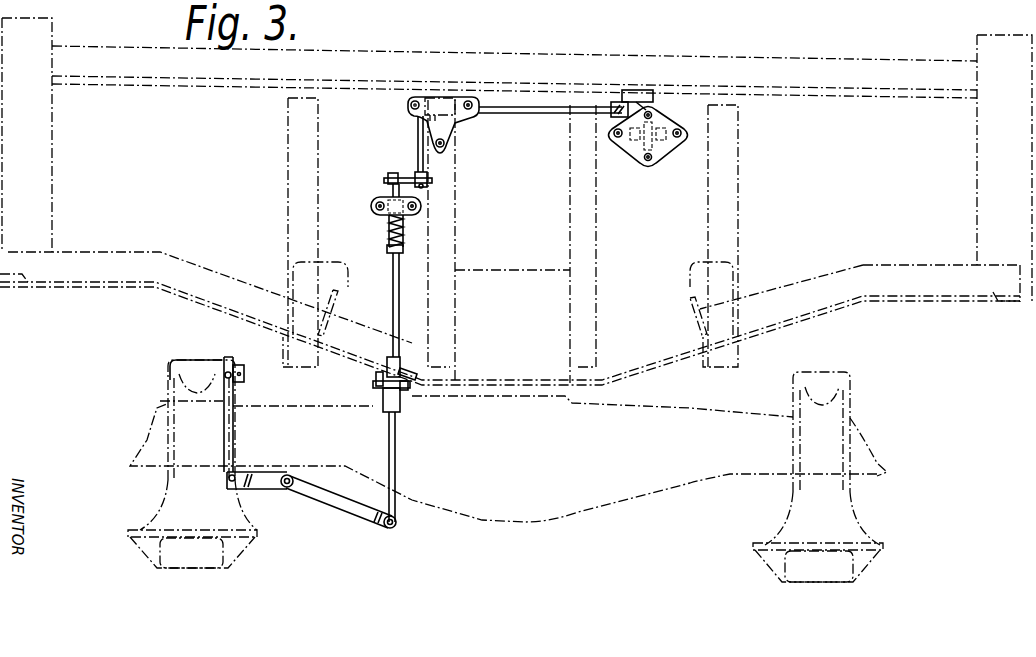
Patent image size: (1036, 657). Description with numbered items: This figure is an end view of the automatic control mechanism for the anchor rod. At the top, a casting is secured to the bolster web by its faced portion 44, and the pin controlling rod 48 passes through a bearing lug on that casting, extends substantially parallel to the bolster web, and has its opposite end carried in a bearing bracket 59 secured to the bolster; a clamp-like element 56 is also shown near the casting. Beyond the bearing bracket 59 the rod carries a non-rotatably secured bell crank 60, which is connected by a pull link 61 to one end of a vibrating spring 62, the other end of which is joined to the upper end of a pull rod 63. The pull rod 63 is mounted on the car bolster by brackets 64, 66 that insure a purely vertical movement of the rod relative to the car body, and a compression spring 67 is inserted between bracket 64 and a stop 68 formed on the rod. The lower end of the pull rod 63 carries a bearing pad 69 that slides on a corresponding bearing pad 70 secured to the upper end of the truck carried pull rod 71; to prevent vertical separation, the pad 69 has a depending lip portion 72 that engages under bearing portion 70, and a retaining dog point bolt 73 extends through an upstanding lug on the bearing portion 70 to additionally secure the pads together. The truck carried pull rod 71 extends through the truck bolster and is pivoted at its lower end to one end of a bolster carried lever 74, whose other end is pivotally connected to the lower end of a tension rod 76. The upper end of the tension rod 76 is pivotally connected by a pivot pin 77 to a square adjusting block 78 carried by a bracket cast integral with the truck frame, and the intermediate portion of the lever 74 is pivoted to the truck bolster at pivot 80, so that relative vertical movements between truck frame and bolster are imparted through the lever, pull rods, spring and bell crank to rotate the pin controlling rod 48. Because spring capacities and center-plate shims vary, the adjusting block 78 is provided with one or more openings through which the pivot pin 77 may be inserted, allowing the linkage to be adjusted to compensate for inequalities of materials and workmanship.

The faced portion 44 is at (669, 160).
The pin controlling rod 48 is at (556, 113).
The clamp 56 is at (636, 90).
The bearing bracket 59 is at (455, 122).
The bell crank 60 is at (423, 99).
The pull link 61 is at (417, 133).
The vibrating spring 62 is at (411, 173).
The pull rod 63 is at (399, 300).
The bracket 64 is at (382, 198).
The bracket 66 is at (389, 360).
The compression spring 67 is at (387, 233).
The stop 68 is at (387, 250).
The bearing pad 69 is at (411, 371).
The bearing pad 70 is at (381, 388).
The truck carried pull rod 71 is at (396, 458).
The depending lip portion 72 is at (410, 389).
The retaining dog point bolt 73 is at (376, 379).
The bolster carried lever 74 is at (338, 496).
The tension rod 76 is at (234, 431).
The pivot pin 77 is at (178, 373).
The adjusting block 78 is at (245, 375).
The pivot 80 is at (287, 490).